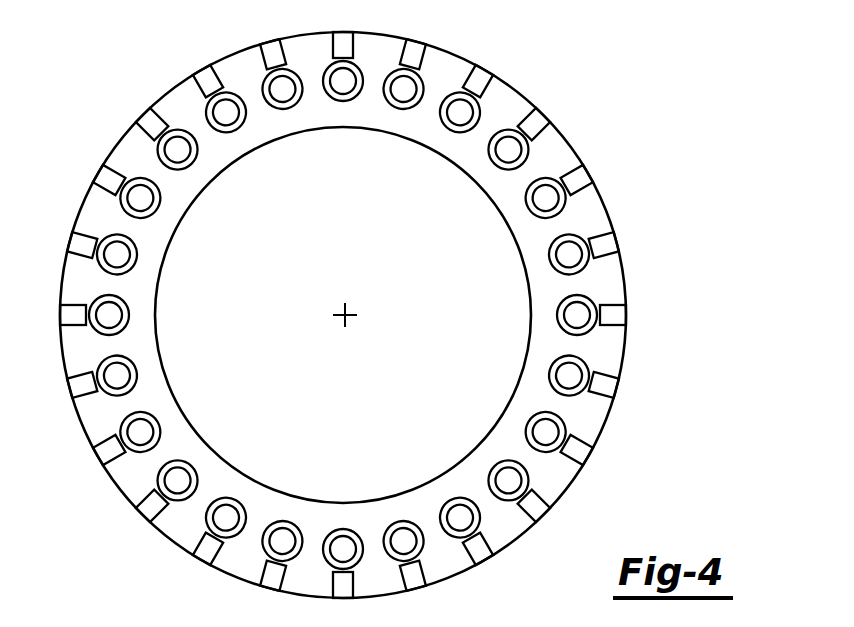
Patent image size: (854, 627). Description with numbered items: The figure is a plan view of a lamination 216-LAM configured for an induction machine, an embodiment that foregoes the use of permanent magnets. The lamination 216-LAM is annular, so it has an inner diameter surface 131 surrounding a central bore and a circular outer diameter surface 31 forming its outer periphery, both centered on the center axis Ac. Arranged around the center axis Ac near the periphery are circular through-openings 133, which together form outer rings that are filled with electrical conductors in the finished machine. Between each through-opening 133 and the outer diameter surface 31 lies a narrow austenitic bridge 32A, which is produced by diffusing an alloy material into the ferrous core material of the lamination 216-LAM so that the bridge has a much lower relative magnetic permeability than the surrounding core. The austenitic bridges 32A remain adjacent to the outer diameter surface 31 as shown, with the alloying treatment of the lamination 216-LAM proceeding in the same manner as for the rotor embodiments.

The lamination 216-LAM is at (620, 96).
The outer diameter surface 31 is at (455, 52).
The inner diameter surface 131 is at (190, 200).
The circular through-openings 133 is at (403, 89).
The austenitic bridge 32A is at (590, 170).
The center axis Ac is at (343, 316).